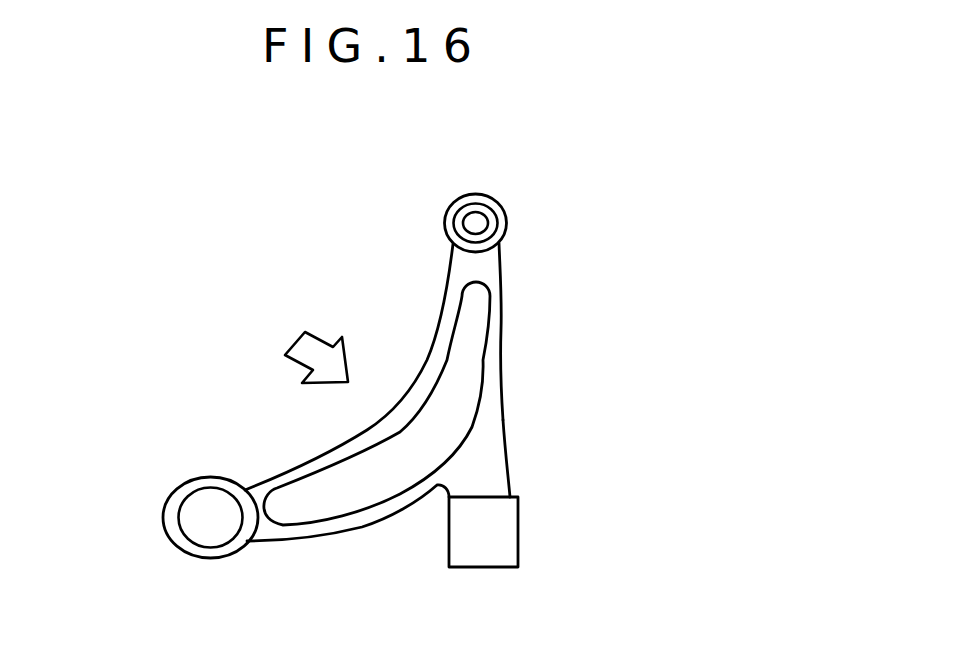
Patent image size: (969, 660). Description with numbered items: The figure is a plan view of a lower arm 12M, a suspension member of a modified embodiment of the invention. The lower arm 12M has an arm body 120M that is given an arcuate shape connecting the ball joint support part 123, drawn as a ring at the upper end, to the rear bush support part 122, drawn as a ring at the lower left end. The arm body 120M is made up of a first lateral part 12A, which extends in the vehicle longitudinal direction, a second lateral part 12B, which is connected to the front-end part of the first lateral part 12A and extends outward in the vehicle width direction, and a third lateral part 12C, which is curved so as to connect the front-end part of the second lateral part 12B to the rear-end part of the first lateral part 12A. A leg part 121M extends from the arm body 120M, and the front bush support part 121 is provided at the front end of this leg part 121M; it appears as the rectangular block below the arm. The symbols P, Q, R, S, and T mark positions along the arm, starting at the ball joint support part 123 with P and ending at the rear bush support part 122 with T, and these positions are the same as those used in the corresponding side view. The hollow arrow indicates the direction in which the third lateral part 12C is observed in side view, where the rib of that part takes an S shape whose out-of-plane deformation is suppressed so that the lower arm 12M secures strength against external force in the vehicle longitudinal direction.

The lower arm 12M is at (596, 309).
The first lateral part 12A is at (362, 526).
The second lateral part 12B is at (506, 297).
The third lateral part 12C is at (448, 282).
The arm body 120M is at (458, 397).
The leg part 121M is at (490, 478).
The front bush support part 121 is at (514, 552).
The rear bush support part 122 is at (164, 510).
The ball joint support part 123 is at (482, 196).
The position P is at (445, 222).
The position Q is at (438, 322).
The position R is at (403, 397).
The position S is at (320, 455).
The position T is at (204, 476).